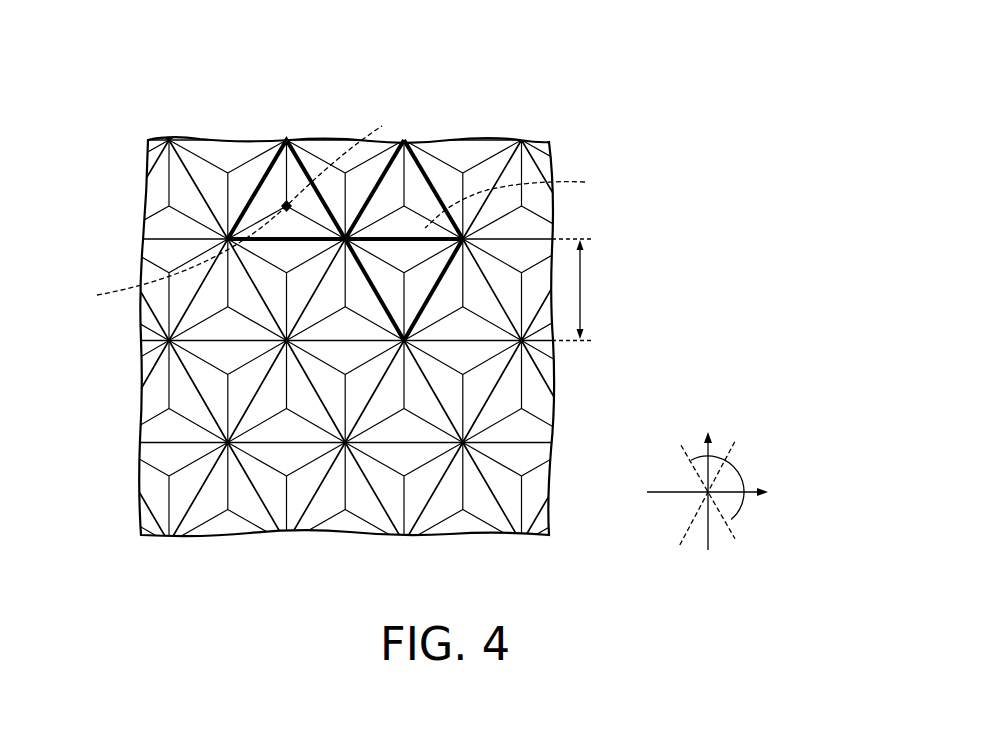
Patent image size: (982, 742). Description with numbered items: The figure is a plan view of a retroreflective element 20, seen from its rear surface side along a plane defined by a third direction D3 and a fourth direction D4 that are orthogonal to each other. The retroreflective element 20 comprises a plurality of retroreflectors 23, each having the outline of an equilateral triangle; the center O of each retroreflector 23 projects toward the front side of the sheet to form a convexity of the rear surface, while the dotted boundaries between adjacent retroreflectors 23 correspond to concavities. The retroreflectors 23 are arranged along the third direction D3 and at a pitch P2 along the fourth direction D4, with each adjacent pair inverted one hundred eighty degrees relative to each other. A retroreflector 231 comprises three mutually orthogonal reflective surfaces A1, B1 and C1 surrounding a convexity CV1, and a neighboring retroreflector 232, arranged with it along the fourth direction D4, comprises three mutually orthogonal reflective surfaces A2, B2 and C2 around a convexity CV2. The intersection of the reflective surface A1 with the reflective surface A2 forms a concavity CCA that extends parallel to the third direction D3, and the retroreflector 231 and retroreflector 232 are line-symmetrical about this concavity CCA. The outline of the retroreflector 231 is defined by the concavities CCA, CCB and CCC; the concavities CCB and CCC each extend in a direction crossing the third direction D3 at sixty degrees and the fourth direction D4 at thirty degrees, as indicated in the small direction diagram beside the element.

The retroreflective element 20 is at (556, 133).
The retroreflector 23 is at (392, 203).
The retroreflector 231 is at (348, 185).
The retroreflector 232 is at (449, 305).
The center O is at (284, 203).
The convexity CV1 is at (378, 170).
The convexity CV2 is at (436, 309).
The reflective surface A1 is at (431, 208).
The reflective surface B1 is at (412, 207).
The reflective surface C1 is at (438, 162).
The reflective surface A2 is at (335, 258).
The reflective surface B2 is at (388, 278).
The reflective surface C2 is at (367, 305).
The concavity CCA is at (414, 271).
The concavity CCB is at (762, 410).
The concavity CCC is at (770, 557).
The pitch P2 is at (583, 290).
The third direction D3 is at (722, 494).
The fourth direction D4 is at (707, 476).